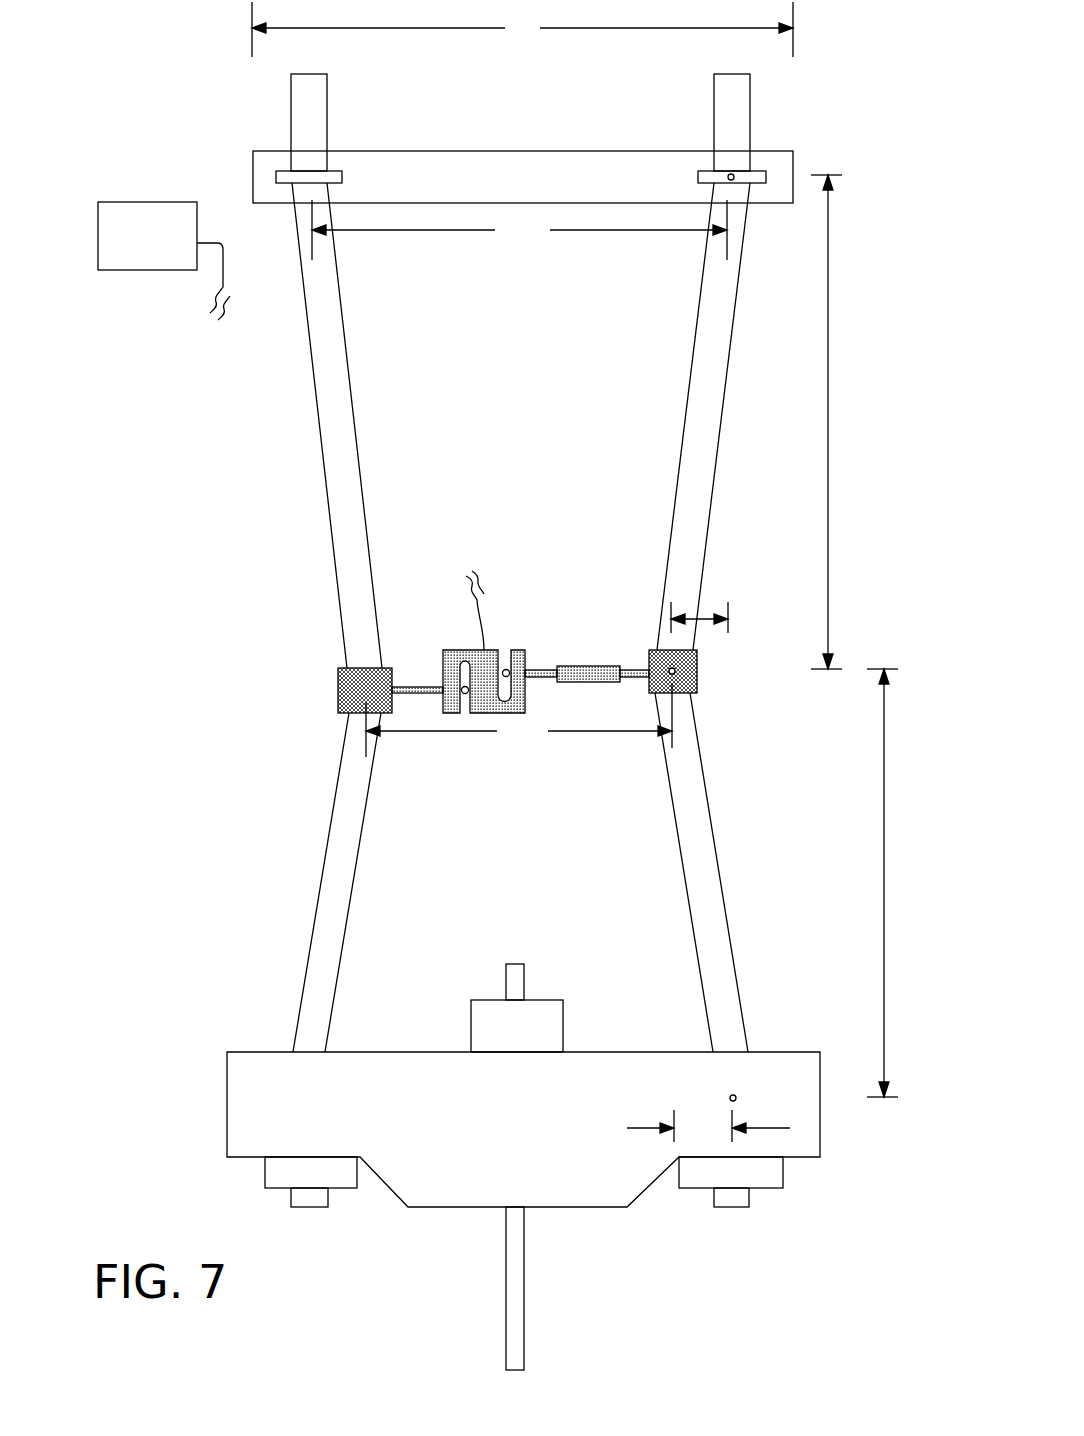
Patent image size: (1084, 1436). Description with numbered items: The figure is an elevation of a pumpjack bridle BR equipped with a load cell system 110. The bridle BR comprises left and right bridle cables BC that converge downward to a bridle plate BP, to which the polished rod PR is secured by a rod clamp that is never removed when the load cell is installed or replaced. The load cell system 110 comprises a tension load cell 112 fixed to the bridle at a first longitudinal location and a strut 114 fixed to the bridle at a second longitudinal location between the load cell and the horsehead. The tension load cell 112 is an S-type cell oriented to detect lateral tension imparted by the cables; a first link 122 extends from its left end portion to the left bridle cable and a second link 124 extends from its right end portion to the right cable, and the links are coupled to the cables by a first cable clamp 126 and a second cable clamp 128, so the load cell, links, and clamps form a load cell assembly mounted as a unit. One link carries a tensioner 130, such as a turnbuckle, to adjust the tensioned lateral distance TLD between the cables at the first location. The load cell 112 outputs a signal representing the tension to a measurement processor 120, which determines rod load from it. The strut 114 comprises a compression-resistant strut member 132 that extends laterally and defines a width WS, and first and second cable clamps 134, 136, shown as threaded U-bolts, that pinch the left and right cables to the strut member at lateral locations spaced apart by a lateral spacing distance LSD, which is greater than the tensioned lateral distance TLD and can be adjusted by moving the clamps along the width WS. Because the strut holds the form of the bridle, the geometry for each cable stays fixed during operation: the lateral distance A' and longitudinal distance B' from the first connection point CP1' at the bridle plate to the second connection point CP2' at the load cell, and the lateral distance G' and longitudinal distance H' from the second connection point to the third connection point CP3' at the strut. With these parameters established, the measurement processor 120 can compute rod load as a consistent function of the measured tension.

The load cell system 110 is at (499, 686).
The tension load cell 112 is at (508, 632).
The strut 114 is at (423, 140).
The measurement processor 120 is at (165, 250).
The first link 122 is at (422, 684).
The second link 124 is at (543, 672).
The first cable clamp 126 is at (348, 694).
The second cable clamp 128 is at (656, 658).
The tensioner 130 is at (592, 666).
The strut member 132 is at (510, 167).
The first cable clamp 134 is at (276, 178).
The second cable clamp 136 is at (700, 176).
The width of the strut WS is at (522, 29).
The lateral spacing distance LSD is at (519, 230).
The tensioned lateral distance TLD is at (519, 720).
The lateral distance G' is at (709, 594).
The longitudinal distance H' is at (846, 422).
The longitudinal distance B' is at (909, 883).
The lateral distance A' is at (696, 1112).
The bridle cable BC is at (700, 368).
The bridle BR is at (250, 977).
The bridle plate BP is at (247, 1110).
The polished rod PR is at (510, 1308).
The first connection point CP1' is at (766, 1079).
The second connection point CP2' is at (726, 705).
The third connection point CP3' is at (775, 133).